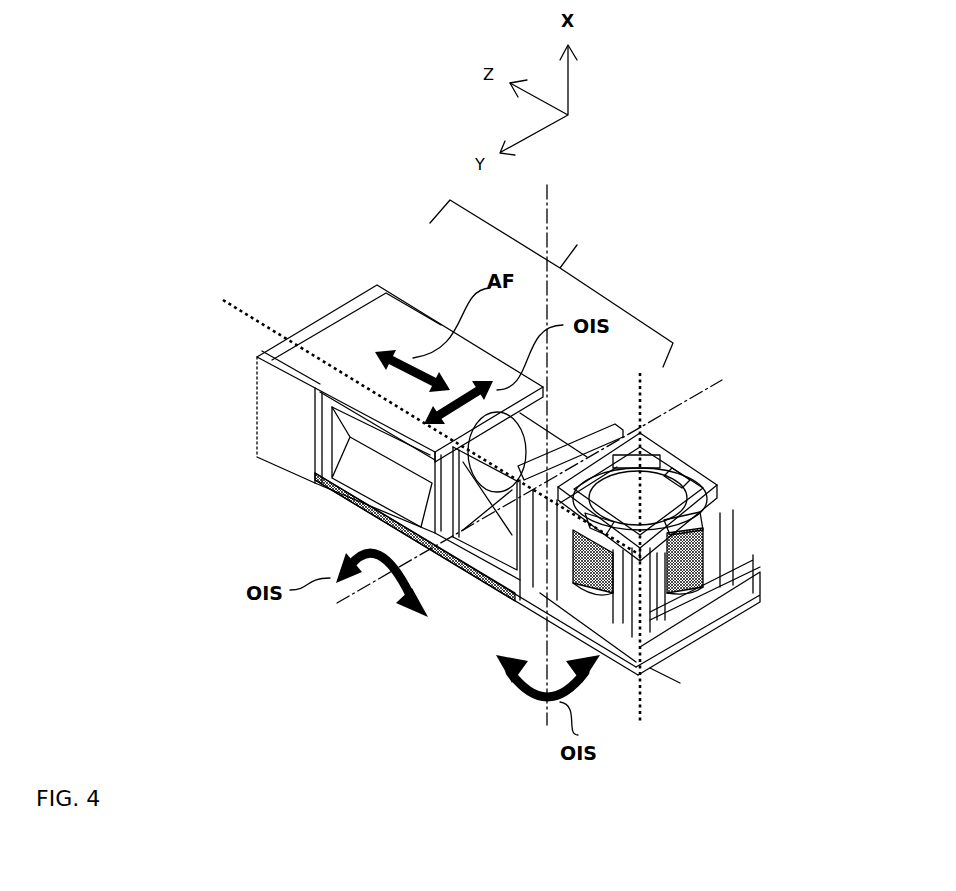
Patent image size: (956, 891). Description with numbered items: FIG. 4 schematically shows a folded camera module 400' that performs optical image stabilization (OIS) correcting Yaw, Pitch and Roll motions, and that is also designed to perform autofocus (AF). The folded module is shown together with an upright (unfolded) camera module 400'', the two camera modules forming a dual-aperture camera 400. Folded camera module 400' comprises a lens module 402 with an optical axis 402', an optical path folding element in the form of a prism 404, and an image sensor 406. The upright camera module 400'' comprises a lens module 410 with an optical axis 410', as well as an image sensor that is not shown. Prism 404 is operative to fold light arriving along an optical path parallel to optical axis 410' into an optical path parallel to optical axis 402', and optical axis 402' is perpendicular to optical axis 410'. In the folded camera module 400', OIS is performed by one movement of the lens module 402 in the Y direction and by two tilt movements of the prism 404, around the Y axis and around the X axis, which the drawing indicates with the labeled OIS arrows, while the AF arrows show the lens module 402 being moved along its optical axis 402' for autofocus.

The dual-aperture camera 400 is at (542, 455).
The folded camera module 400' is at (551, 283).
The upright camera module 400'' is at (675, 450).
The lens module 402 is at (385, 503).
The optical axis 402' is at (408, 427).
The prism 404 is at (509, 525).
The image sensor 406 is at (357, 340).
The lens module 410 is at (696, 535).
The optical axis 410' is at (712, 548).